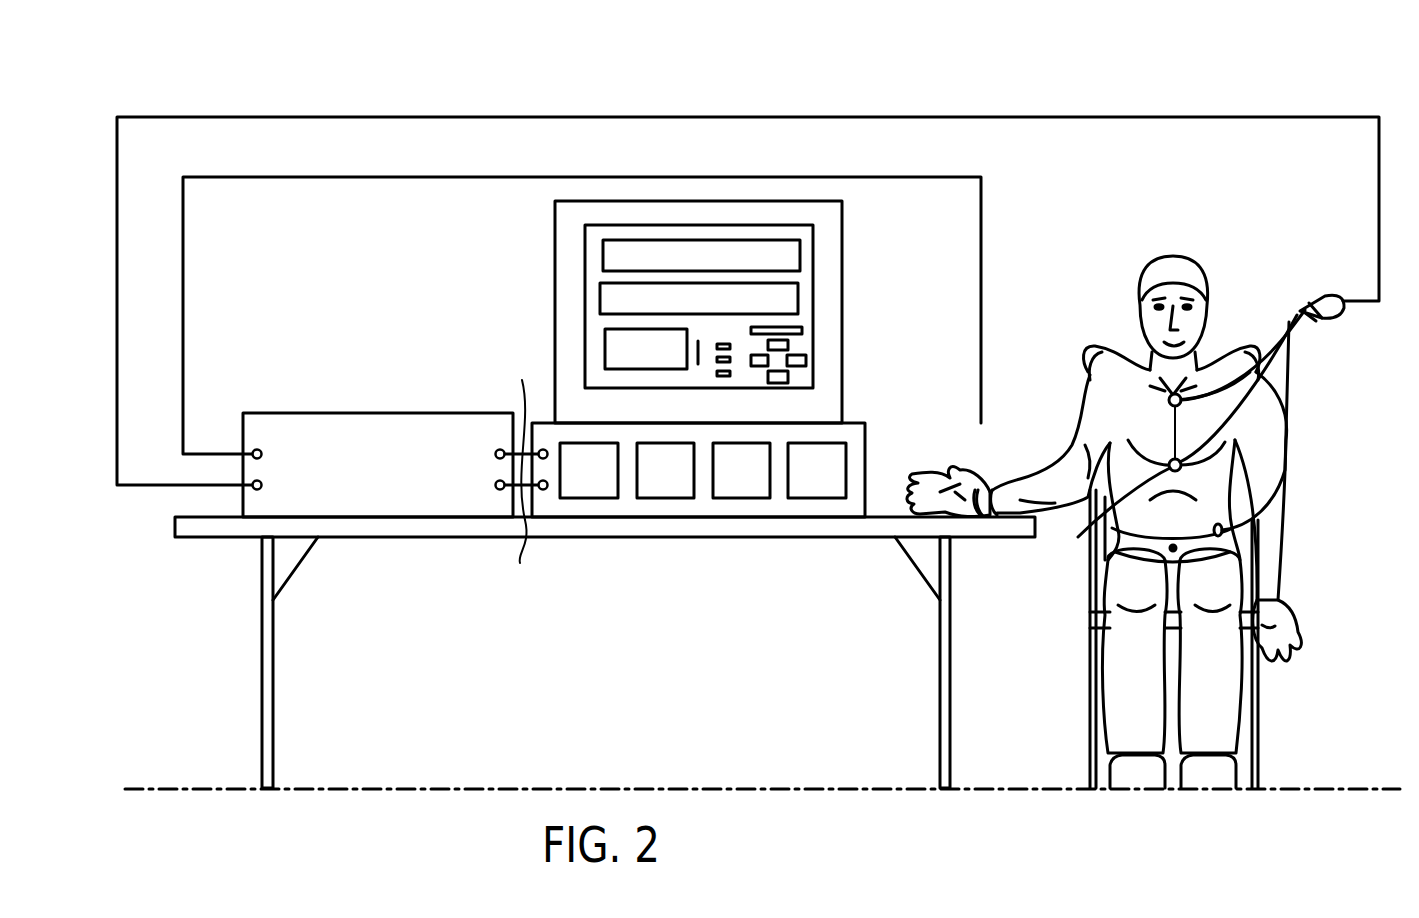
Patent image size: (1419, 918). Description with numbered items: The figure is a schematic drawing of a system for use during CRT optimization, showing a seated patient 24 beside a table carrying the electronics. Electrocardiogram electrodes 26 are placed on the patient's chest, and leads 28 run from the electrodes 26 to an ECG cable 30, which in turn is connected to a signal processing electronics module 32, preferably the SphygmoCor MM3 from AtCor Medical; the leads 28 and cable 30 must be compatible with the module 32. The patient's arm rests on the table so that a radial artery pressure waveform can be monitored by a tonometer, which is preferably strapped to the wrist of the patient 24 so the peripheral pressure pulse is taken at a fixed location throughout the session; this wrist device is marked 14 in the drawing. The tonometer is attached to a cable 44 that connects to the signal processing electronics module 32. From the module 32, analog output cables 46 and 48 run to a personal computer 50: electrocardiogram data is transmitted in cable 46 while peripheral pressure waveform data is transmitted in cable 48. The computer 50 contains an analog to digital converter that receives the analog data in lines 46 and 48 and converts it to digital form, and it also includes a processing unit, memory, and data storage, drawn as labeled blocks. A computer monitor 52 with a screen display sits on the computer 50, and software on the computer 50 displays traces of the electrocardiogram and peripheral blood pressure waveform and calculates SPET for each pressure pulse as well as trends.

The sensor / wrist cuff 14 is at (996, 490).
The patient 24 is at (1178, 253).
The electrocardiogram electrodes 26 is at (1169, 400).
The leads 28 is at (1276, 335).
The ECG cable 30 is at (350, 117).
The signal processing electronics module 32 is at (384, 413).
The cable 44 is at (466, 177).
The analog output cable 46 is at (521, 434).
The analog output cable 48 is at (521, 558).
The personal computer 50 is at (865, 470).
The computer monitor 52 is at (813, 305).